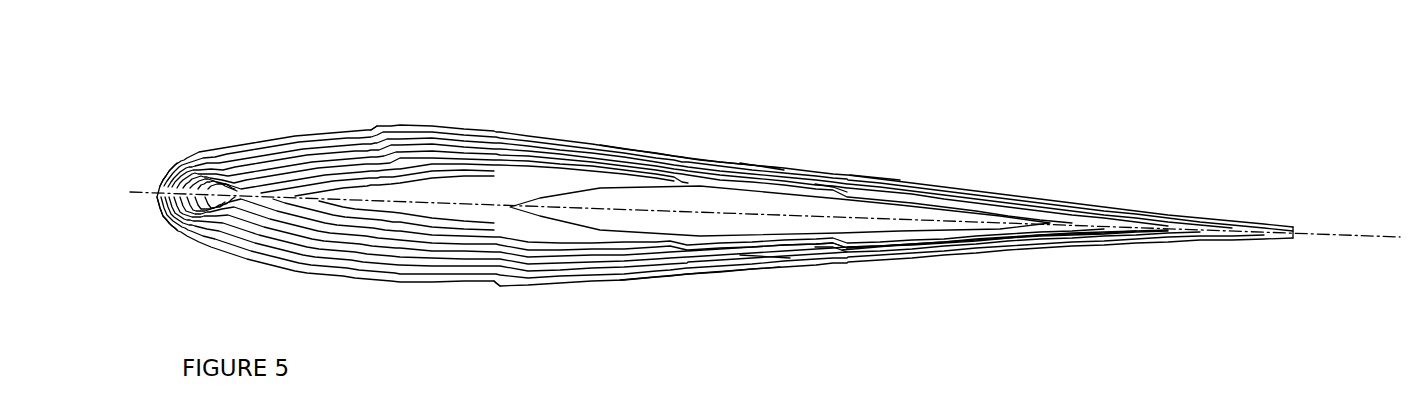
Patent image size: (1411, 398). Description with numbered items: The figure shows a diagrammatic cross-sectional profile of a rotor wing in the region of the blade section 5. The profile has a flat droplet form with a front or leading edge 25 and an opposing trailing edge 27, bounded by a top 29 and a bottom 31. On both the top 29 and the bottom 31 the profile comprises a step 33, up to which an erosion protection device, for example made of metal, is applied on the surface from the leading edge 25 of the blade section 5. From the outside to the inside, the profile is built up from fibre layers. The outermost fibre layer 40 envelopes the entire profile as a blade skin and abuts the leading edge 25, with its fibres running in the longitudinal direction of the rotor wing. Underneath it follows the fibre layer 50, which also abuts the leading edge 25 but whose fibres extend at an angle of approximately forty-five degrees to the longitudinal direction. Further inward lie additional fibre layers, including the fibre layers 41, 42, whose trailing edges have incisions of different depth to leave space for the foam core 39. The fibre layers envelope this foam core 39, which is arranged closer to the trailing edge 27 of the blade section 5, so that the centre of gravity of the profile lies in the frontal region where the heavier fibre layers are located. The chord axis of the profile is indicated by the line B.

The blade section 5 is at (714, 182).
The leading edge 25 is at (130, 166).
The trailing edge 27 is at (1293, 228).
The top 29 is at (447, 100).
The bottom 31 is at (451, 295).
The step 33 is at (371, 128).
The foam core 39 is at (680, 205).
The fibre layer 40 is at (672, 152).
The fibre layer 41 is at (830, 190).
The fibre layer 42 is at (850, 175).
The fibre layer 50 is at (784, 170).
The chord axis B is at (1323, 236).